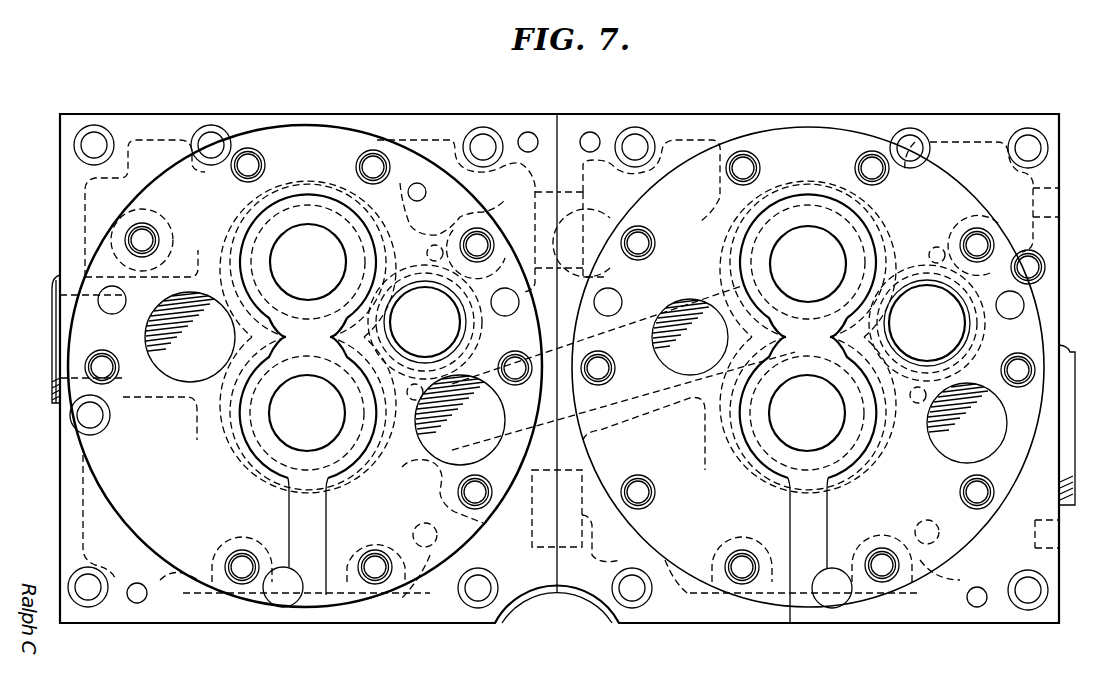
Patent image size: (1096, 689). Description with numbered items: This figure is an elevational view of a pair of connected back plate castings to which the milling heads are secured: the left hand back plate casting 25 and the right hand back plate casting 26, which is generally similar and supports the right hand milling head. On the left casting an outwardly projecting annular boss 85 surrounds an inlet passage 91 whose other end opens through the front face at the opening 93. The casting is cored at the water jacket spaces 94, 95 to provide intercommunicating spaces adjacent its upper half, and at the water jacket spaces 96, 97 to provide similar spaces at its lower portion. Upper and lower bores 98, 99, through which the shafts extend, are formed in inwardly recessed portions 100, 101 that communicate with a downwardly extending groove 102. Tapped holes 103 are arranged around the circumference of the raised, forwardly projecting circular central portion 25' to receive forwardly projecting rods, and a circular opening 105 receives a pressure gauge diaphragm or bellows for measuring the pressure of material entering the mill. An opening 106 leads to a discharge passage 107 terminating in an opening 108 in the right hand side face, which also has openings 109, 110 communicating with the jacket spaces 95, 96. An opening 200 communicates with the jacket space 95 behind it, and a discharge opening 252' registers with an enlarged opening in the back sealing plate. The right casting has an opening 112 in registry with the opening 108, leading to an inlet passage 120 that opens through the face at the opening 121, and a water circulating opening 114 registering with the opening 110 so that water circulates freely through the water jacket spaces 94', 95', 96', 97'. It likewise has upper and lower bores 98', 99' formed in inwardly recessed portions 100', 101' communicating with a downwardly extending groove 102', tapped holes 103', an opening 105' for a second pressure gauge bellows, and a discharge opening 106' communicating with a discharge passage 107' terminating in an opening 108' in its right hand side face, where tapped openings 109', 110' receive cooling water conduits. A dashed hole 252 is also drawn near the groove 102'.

The left hand back plate casting 25 is at (200, 127).
The raised, forwardly projecting, circular central portion 25' is at (62, 429).
The right hand back plate casting 26 is at (641, 126).
The annular boss 85 is at (57, 276).
The inlet passage 91 is at (52, 343).
The front face opening of inlet passage 93 is at (155, 357).
The water jacket space 94 is at (145, 179).
The water jacket space 94' is at (648, 179).
The water jacket space 95 is at (456, 185).
The water jacket space 95' is at (981, 178).
The water jacket space 96 is at (417, 603).
The water jacket space 96' is at (940, 581).
The water jacket space 97 is at (176, 613).
The water jacket space 97' is at (682, 566).
The upper bore 98 is at (308, 262).
The upper bore 98' is at (808, 262).
The lower bore 99 is at (307, 413).
The lower bore 99' is at (807, 413).
The inwardly recessed portion 100 is at (426, 205).
The inwardly recessed portion 100' is at (823, 267).
The inwardly recessed portion 101 is at (308, 337).
The inwardly recessed portion 101' is at (808, 337).
The downwardly extending groove 102 is at (326, 536).
The downwardly extending groove 102' is at (833, 550).
The tapped holes 103 is at (240, 131).
The tapped holes 103' is at (770, 133).
The circular opening 105 is at (425, 322).
The opening 105' is at (927, 323).
The opening 106 is at (510, 383).
The discharge opening 106' is at (1017, 384).
The discharge passage 107 is at (460, 420).
The discharge passage 107' is at (967, 412).
The opening 108 is at (599, 382).
The opening 108' is at (1040, 423).
The opening 109 is at (522, 226).
The tapped opening 109' is at (1018, 197).
The opening 110 is at (537, 514).
The tapped opening 110' is at (1023, 540).
The opening 112 is at (598, 334).
The water circulating opening 114 is at (603, 538).
The inlet passage 120 is at (623, 401).
The opening 121 is at (724, 352).
The opening 200 is at (418, 183).
The dashed hole 252 is at (912, 521).
The discharge opening 252' is at (412, 520).